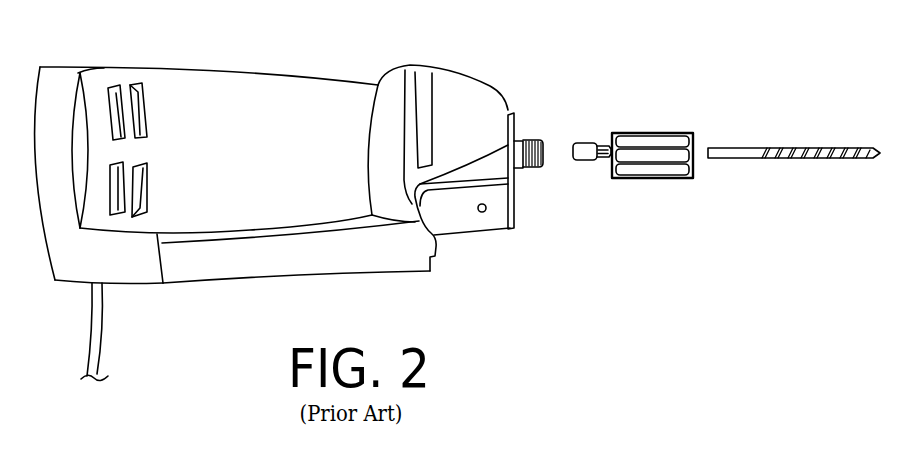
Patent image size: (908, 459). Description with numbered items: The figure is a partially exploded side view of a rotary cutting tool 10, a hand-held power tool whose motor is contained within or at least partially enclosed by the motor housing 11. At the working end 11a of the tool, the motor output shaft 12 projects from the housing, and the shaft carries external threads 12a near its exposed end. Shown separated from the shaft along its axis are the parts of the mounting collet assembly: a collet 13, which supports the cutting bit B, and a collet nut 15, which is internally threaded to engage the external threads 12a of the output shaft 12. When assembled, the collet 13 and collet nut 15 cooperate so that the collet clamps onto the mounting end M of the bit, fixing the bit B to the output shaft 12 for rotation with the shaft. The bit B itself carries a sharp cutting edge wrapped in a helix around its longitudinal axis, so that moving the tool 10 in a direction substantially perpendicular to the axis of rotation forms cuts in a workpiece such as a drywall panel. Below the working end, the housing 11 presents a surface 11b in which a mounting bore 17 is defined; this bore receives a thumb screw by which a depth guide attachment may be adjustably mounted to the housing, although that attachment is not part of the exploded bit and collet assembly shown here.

The rotary cutting tool 10 is at (270, 73).
The motor housing 11 is at (197, 86).
The working end 11a is at (511, 116).
The surface of the housing 11b is at (503, 205).
The motor output shaft 12 is at (519, 169).
The external threads 12a is at (537, 139).
The collet 13 is at (587, 141).
The collet nut 15 is at (650, 133).
The mounting bore 17 is at (482, 213).
The cutting bit B is at (794, 153).
The mounting end M is at (735, 152).